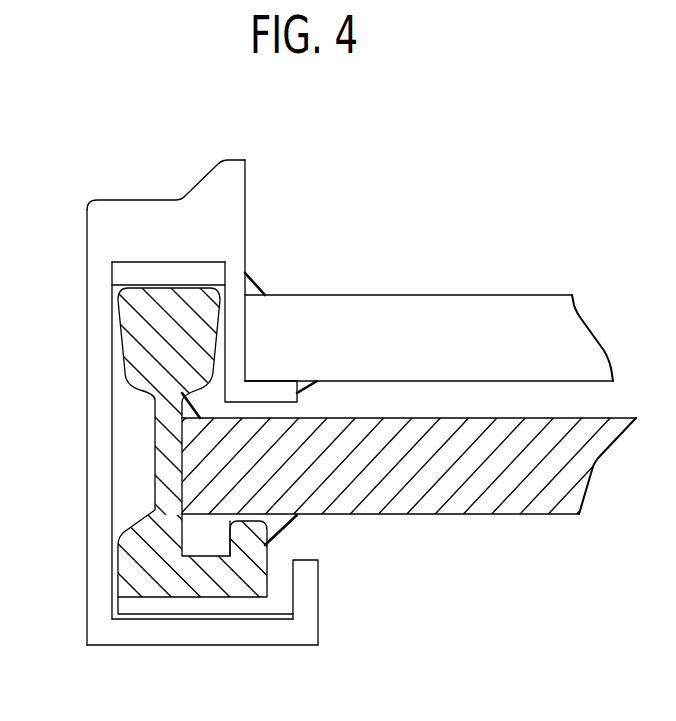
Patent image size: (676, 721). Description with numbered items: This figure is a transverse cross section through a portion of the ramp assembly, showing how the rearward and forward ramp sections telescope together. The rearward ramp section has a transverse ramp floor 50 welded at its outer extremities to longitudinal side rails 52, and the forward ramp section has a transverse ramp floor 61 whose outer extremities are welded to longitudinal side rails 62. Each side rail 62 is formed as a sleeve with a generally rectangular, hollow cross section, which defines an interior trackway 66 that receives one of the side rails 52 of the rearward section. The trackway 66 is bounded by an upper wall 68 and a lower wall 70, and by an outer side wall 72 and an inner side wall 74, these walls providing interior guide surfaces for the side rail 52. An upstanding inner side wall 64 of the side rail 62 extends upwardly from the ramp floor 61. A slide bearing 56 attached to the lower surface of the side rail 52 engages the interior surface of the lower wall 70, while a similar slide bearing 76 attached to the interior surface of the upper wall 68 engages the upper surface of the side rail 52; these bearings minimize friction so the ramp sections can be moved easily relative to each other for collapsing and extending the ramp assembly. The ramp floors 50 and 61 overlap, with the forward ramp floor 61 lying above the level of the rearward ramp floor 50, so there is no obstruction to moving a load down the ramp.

The transverse ramp floor 50 is at (435, 515).
The longitudinal side rail 52 is at (155, 450).
The slide bearing 56 is at (133, 607).
The transverse ramp floor 61 is at (425, 296).
The longitudinal side rail 62 is at (190, 429).
The upstanding inner side wall 64 is at (245, 200).
The interior trackway 66 is at (112, 408).
The upper wall 68 is at (160, 237).
The lower wall 70 is at (147, 632).
The outer side wall 72 is at (97, 521).
The inner side wall 74 is at (233, 327).
The slide bearing 76 is at (205, 272).